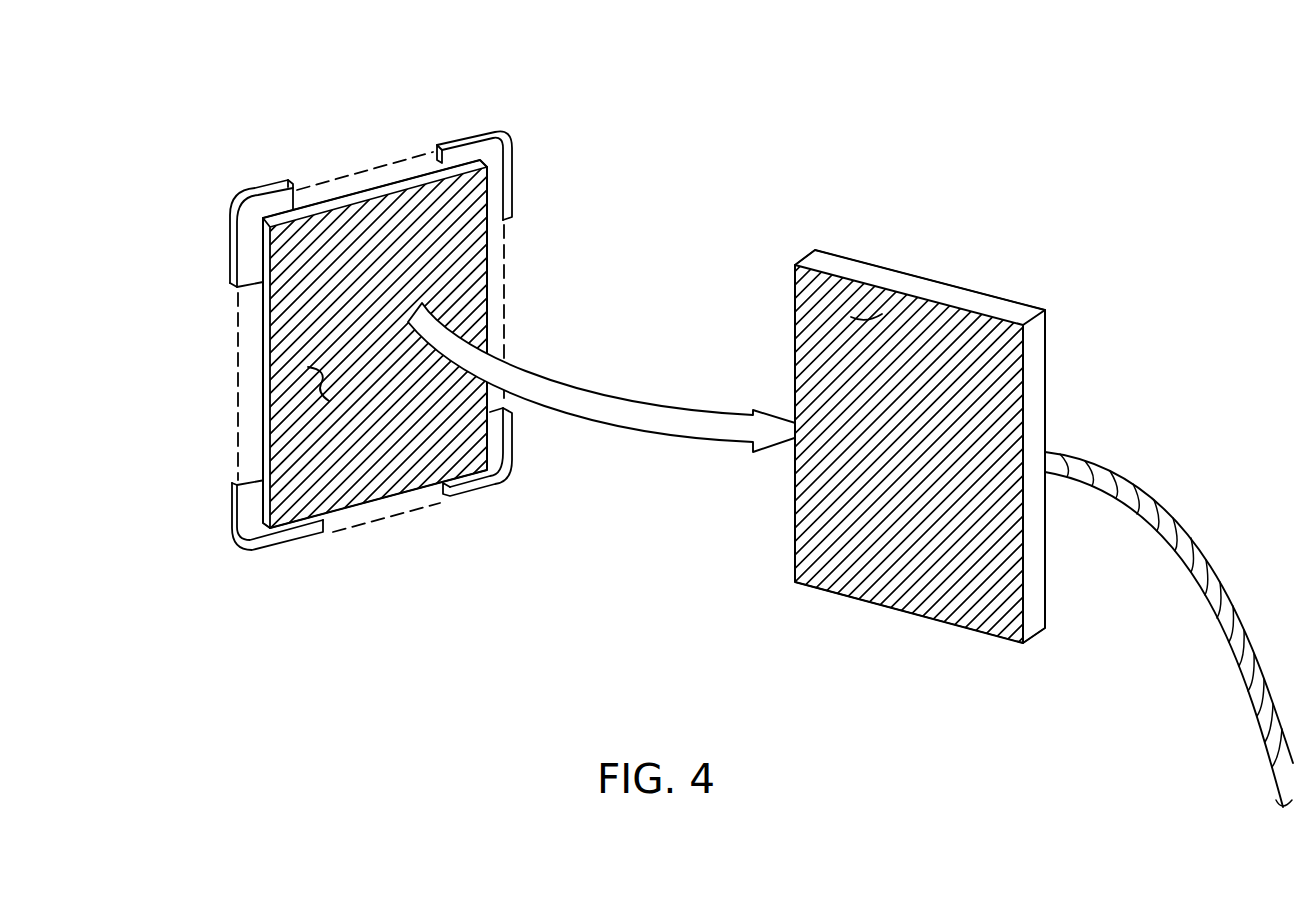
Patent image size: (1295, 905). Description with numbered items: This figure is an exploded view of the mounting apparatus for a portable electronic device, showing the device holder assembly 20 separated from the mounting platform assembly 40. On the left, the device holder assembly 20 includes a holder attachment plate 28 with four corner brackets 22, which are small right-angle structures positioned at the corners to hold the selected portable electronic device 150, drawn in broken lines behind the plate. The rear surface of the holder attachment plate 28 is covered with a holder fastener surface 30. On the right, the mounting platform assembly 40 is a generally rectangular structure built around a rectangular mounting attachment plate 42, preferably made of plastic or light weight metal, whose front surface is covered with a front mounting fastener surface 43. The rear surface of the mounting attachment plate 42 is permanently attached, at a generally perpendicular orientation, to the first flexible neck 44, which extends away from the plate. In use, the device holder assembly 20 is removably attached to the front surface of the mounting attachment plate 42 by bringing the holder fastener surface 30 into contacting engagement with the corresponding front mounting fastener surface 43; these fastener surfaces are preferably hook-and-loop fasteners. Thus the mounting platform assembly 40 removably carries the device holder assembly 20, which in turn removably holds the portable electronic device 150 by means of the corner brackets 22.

The device holder assembly 20 is at (158, 303).
The corner brackets 22 is at (270, 182).
The holder attachment plate 28 is at (488, 246).
The holder fastener surface 30 is at (318, 379).
The portable electronic device 150 is at (237, 382).
The mounting platform assembly 40 is at (1075, 357).
The mounting attachment plate 42 is at (960, 284).
The front mounting fastener surface 43 is at (868, 317).
The first flexible neck 44 is at (1215, 570).